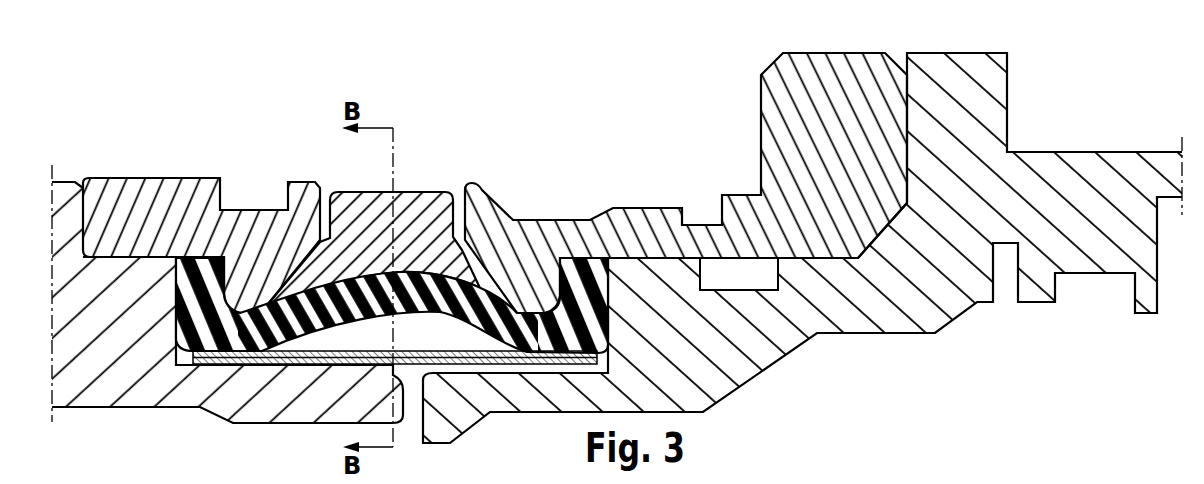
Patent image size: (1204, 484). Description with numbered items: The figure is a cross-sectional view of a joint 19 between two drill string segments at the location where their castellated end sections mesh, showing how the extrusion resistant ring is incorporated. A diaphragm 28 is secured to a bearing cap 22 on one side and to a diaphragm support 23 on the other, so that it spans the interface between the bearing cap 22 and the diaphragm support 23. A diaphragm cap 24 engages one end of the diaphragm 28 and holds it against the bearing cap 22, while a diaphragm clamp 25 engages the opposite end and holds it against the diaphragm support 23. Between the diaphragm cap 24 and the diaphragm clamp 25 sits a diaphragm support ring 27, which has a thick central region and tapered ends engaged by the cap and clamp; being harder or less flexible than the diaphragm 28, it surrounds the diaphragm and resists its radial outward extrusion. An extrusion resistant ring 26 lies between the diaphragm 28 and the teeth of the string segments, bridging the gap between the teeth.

The joint 19 is at (348, 277).
The bearing cap 22 is at (980, 122).
The diaphragm support 23 is at (147, 372).
The diaphragm cap 24 is at (820, 85).
The diaphragm clamp 25 is at (303, 193).
The extrusion resistant ring 26 is at (417, 353).
The diaphragm support ring 27 is at (415, 213).
The diaphragm 28 is at (337, 294).